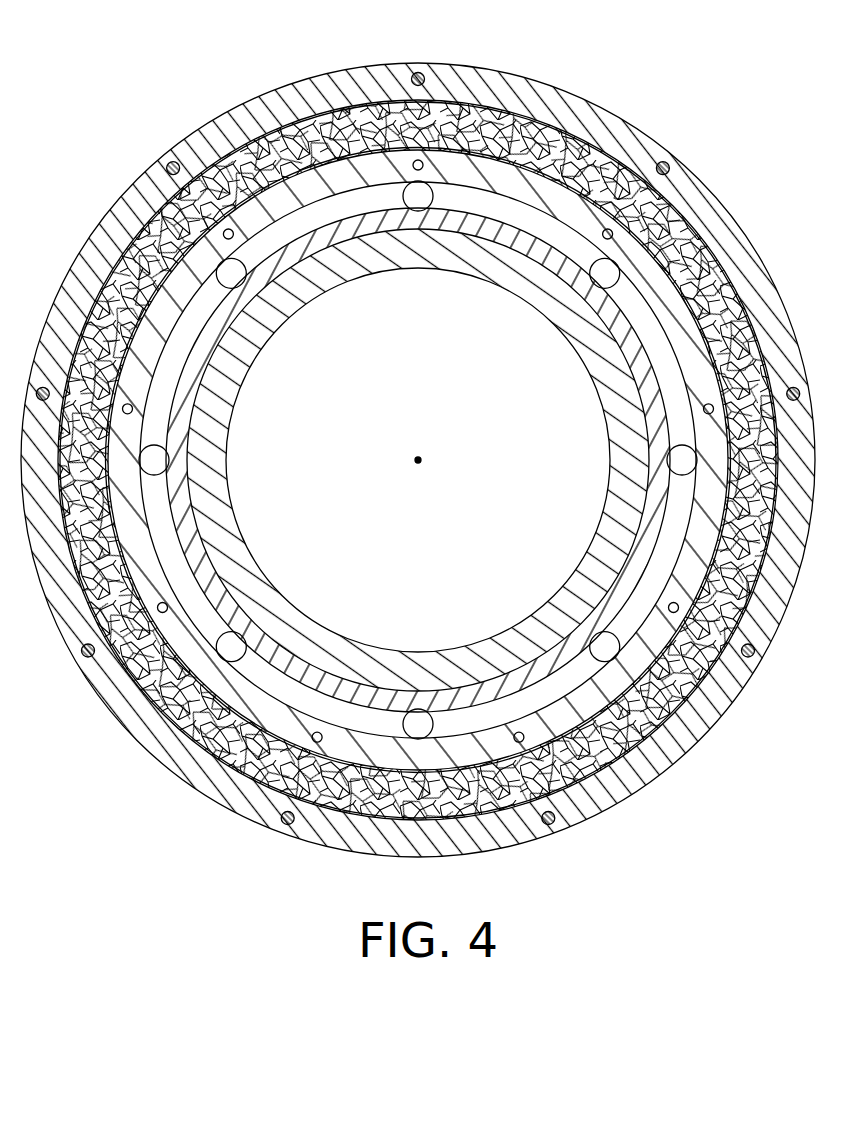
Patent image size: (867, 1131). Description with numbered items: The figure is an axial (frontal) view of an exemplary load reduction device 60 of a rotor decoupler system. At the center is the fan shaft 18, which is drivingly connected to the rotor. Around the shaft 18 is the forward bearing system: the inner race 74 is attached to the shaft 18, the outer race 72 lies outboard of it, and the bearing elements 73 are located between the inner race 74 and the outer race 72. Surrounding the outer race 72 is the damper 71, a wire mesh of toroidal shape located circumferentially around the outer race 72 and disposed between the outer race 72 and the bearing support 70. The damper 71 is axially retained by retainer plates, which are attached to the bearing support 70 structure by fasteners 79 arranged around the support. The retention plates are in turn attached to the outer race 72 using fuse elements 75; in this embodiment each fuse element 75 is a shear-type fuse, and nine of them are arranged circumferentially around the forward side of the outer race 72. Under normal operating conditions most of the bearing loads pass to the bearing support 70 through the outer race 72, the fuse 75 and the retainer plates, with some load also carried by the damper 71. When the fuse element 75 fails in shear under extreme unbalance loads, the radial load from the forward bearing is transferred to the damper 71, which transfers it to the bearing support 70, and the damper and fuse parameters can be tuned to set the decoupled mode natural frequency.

The load reduction device 60 is at (196, 60).
The bearing support 70 is at (150, 732).
The damper 71 is at (228, 776).
The outer race 72 is at (630, 773).
The bearing elements 73 is at (558, 632).
The inner race 74 is at (646, 516).
The fuse element 75 is at (565, 796).
The fasteners 79 is at (547, 825).
The shaft 18 is at (482, 640).